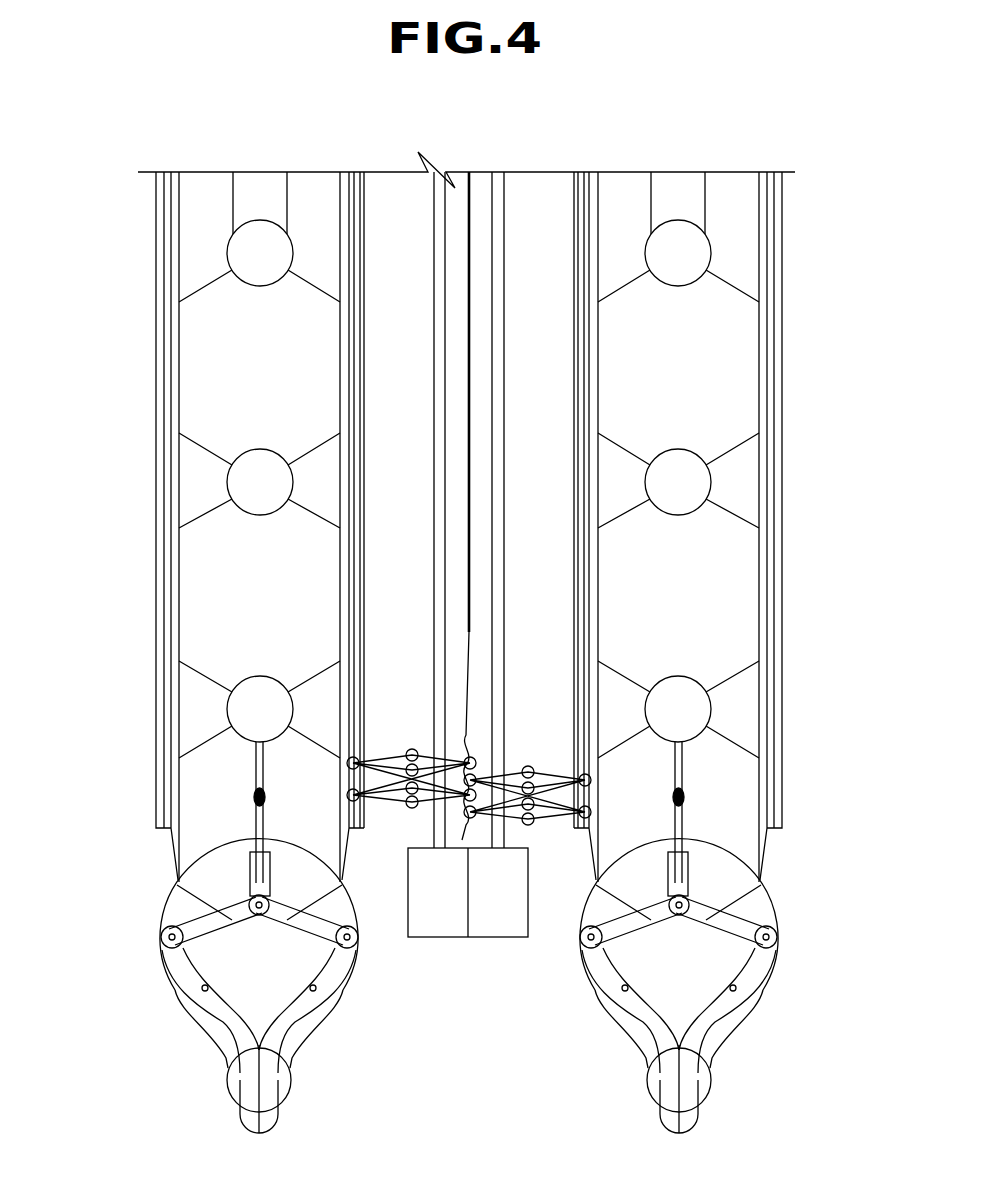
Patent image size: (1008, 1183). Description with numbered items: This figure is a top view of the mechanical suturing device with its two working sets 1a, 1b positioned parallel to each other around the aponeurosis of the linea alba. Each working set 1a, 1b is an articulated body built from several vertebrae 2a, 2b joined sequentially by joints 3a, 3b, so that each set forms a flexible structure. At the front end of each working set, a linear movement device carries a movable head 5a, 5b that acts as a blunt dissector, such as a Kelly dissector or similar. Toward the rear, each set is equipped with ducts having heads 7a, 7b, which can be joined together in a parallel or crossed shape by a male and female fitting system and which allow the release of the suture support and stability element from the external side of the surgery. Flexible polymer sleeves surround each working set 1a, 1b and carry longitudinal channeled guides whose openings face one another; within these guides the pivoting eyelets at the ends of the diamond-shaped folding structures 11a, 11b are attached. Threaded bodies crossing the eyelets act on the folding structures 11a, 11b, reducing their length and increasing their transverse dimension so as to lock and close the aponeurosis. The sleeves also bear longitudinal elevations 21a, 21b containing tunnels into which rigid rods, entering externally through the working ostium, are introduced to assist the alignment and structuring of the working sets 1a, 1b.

The working set 1a is at (197, 652).
The working set 1b is at (734, 652).
The vertebrae 2a is at (225, 595).
The vertebrae 2b is at (703, 625).
The joints 3a is at (250, 482).
The joints 3b is at (690, 705).
The movable head 5a is at (190, 913).
The movable head 5b is at (745, 913).
The duct with head 7a is at (435, 383).
The duct with head 7b is at (502, 392).
The diamond-shaped folding structure 11a is at (386, 808).
The diamond-shaped folding structure 11b is at (550, 822).
The longitudinal elevation 21a is at (163, 701).
The longitudinal elevation 21b is at (780, 481).